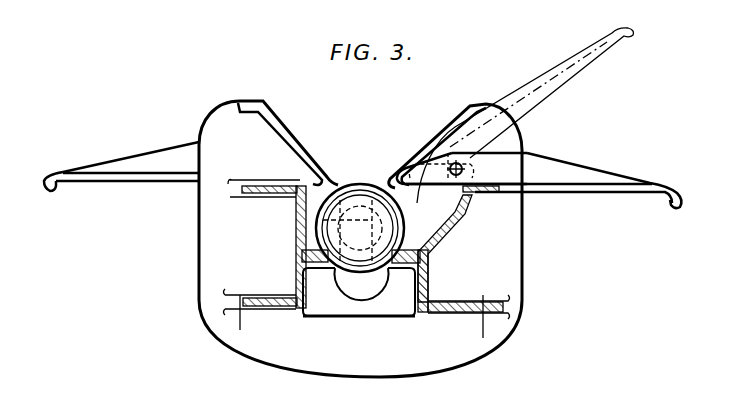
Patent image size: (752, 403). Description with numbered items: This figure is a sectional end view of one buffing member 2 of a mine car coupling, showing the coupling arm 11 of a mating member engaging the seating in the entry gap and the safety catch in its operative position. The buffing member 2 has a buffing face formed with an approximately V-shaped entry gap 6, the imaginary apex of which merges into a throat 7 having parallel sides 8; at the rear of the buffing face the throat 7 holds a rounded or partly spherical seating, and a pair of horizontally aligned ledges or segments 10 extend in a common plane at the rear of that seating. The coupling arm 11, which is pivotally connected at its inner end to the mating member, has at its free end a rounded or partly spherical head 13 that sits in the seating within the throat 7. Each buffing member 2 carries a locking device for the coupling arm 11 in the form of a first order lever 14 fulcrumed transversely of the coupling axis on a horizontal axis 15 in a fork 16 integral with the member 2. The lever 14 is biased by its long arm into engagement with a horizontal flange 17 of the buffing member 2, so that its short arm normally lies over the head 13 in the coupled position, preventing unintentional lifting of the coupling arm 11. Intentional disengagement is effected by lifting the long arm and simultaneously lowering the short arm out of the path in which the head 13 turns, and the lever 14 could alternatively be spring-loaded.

The buffing member 2 is at (527, 229).
The V-shaped entry gap 6 is at (277, 112).
The throat 7 is at (300, 214).
The parallel sides 8 is at (292, 229).
The ledges or segments 10 is at (300, 257).
The coupling arm 11 is at (378, 280).
The head 13 is at (340, 268).
The first order lever 14 is at (130, 156).
The horizontal axis 15 is at (519, 195).
The fork 16 is at (506, 145).
The horizontal flange 17 is at (462, 174).